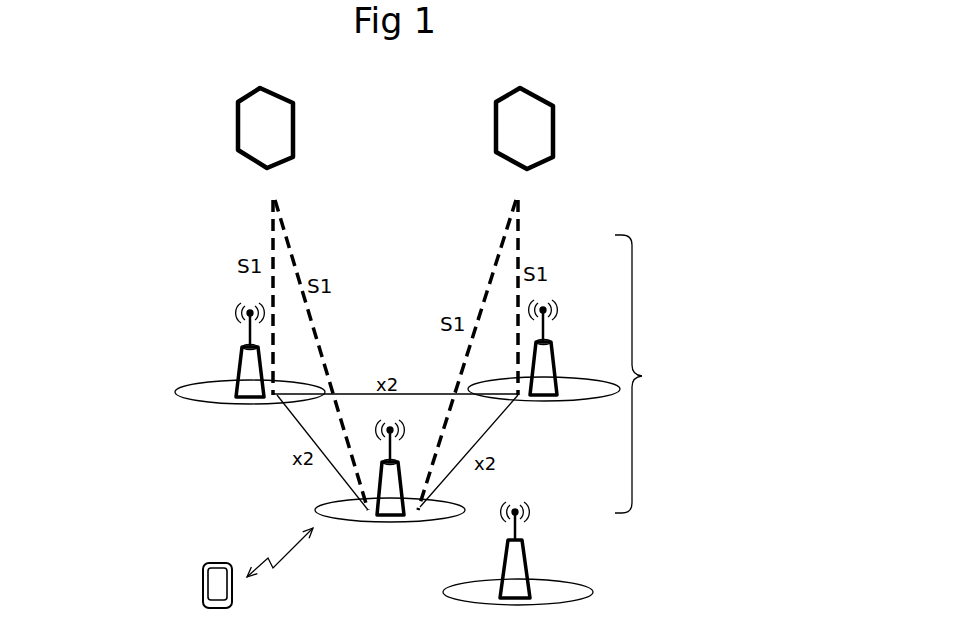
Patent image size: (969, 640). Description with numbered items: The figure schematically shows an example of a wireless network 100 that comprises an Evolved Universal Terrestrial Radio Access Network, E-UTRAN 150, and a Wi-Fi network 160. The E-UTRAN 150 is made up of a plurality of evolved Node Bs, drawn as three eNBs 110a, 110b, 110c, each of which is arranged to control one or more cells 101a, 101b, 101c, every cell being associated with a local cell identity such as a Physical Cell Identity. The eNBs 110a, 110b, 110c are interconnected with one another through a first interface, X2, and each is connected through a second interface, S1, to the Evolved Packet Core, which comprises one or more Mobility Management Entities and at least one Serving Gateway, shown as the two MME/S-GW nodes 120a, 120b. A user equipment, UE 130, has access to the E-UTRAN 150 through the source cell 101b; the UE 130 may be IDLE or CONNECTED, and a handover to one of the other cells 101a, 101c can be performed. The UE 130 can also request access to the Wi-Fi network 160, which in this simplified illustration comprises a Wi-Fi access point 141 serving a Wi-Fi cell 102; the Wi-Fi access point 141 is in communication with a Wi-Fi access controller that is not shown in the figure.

The wireless network 100 is at (615, 97).
The MME/S-GW 120a is at (253, 130).
The MME/S-GW 120b is at (513, 118).
The E-UTRAN 150 is at (648, 257).
The eNB 110a is at (237, 360).
The eNB 110b is at (378, 508).
The eNB 110c is at (555, 363).
The cell 101a is at (178, 392).
The source cell 101b is at (320, 508).
The cell 101c is at (600, 400).
The user equipment 130 is at (203, 582).
The Wi-Fi access point 141 is at (518, 570).
The Wi-Fi cell 102 is at (520, 607).
The Wi-Fi network 160 is at (612, 583).